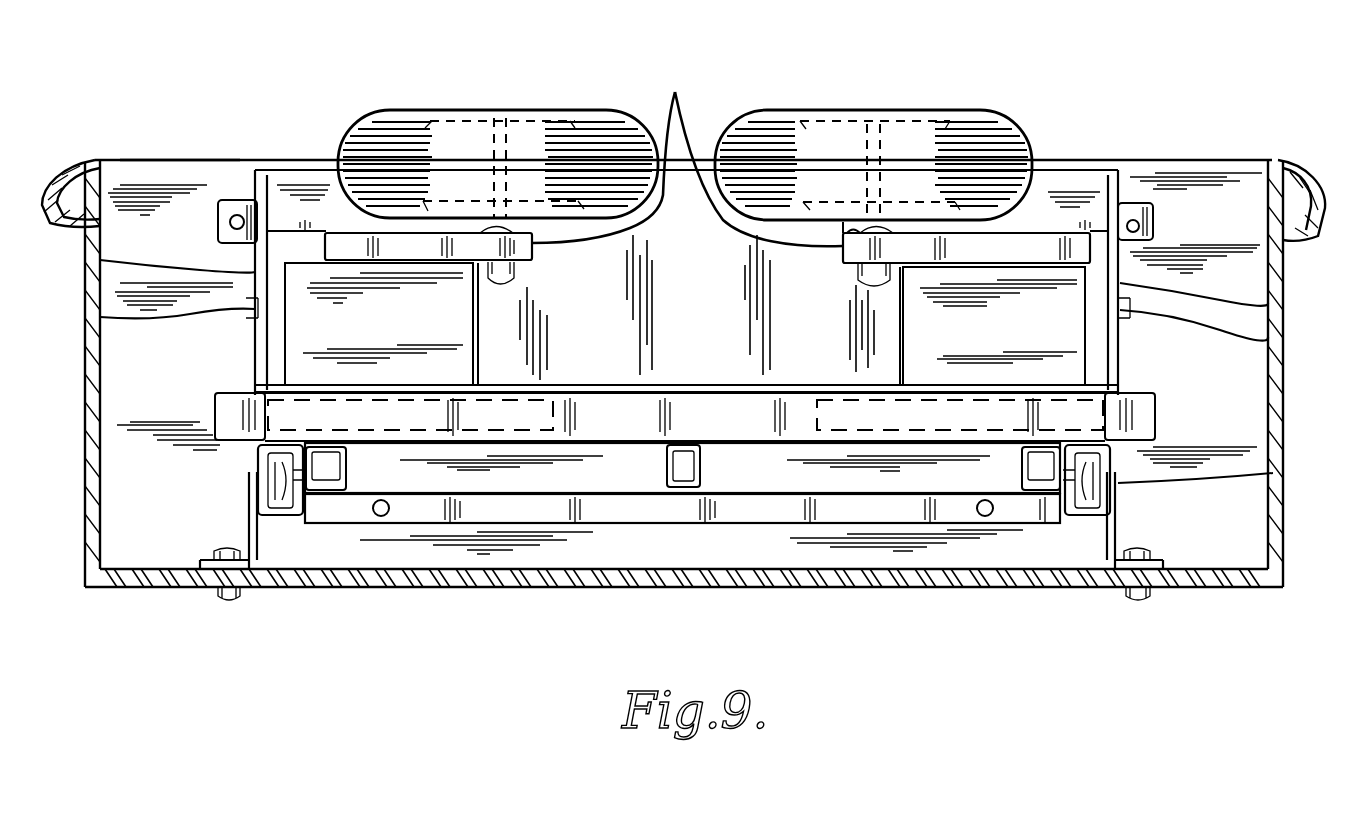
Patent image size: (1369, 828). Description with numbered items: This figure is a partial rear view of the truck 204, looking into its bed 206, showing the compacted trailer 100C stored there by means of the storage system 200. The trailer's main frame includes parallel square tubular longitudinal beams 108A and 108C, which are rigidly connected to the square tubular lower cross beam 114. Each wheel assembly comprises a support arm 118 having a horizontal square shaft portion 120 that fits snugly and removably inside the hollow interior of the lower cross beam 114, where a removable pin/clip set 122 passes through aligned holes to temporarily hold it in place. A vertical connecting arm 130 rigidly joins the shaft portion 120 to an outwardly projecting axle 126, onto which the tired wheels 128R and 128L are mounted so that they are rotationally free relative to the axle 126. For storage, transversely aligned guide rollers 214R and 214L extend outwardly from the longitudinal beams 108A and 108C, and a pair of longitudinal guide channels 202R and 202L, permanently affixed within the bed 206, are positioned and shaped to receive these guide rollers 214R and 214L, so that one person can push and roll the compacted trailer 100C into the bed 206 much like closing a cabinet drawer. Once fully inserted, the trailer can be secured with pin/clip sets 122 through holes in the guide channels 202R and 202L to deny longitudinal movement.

The system 200 is at (1094, 72).
The truck 204 is at (198, 158).
The vertical connecting arm 130 is at (322, 234).
The tired wheel 128L is at (428, 80).
The tired wheel 128R is at (1010, 116).
The axle 126 is at (505, 108).
The support arm 118 is at (707, 173).
The compacted trailer 100C is at (1094, 170).
The shaft portion 120 is at (100, 261).
The pin/clip set 122 is at (100, 317).
The guide roller 214R is at (1273, 473).
The guide roller 214L is at (270, 516).
The longitudinal guide channel 202L is at (253, 522).
The longitudinal guide channel 202R is at (1120, 530).
The longitudinal beam 108A is at (347, 460).
The longitudinal beam 108C is at (1022, 462).
The bed 206 is at (603, 570).
The lower cross beam 114 is at (750, 527).